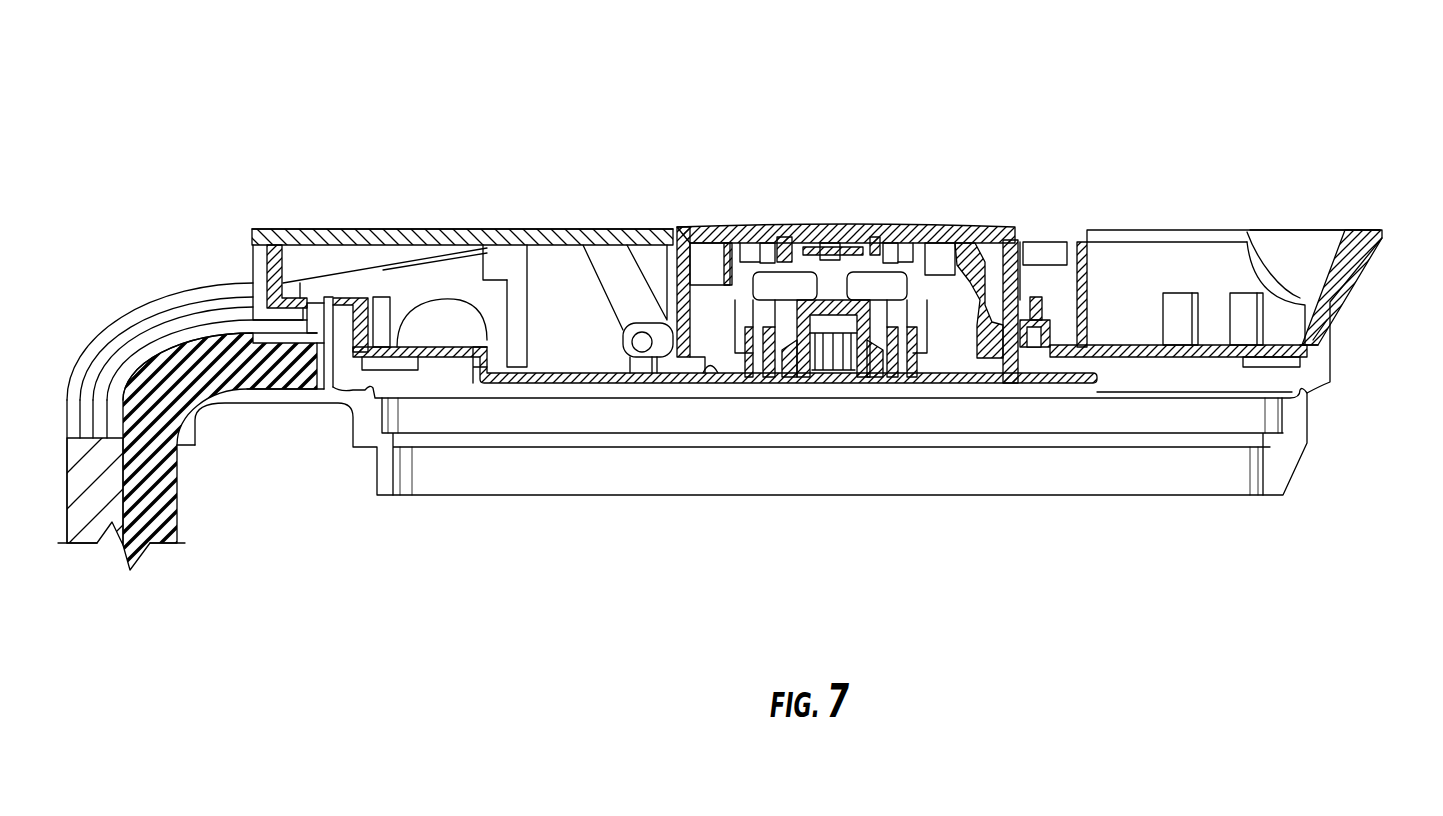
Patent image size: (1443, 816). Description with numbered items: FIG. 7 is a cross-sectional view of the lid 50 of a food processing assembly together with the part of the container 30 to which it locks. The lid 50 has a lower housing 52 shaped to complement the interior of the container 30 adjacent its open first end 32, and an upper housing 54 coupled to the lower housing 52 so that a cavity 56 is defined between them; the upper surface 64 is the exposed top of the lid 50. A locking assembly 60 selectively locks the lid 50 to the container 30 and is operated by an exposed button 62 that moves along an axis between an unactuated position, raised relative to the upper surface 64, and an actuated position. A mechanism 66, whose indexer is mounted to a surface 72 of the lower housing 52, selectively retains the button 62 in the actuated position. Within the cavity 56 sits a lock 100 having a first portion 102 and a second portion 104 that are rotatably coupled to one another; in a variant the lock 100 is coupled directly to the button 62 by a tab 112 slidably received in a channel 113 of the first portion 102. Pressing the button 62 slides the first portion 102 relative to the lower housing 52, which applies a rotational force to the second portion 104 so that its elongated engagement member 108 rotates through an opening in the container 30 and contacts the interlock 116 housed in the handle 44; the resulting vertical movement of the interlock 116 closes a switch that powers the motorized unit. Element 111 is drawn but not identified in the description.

The container 30 is at (1337, 452).
The first end 32 is at (1378, 244).
The handle 44 is at (118, 340).
The lid 50 is at (1235, 154).
The lower housing 52 is at (517, 385).
The upper housing 54 is at (500, 250).
The cavity 56 is at (1135, 292).
The locking assembly 60 is at (687, 226).
The button 62 is at (868, 232).
The upper surface 64 is at (430, 231).
The mechanism 66 is at (917, 293).
The surface 72 is at (706, 364).
The lock 100 is at (567, 244).
The first portion 102 is at (584, 349).
The second portion 104 is at (410, 292).
The engagement member 108 is at (265, 322).
The stem 111 is at (317, 335).
The tab 112 is at (661, 349).
The channel 113 is at (625, 290).
The interlock 116 is at (178, 486).